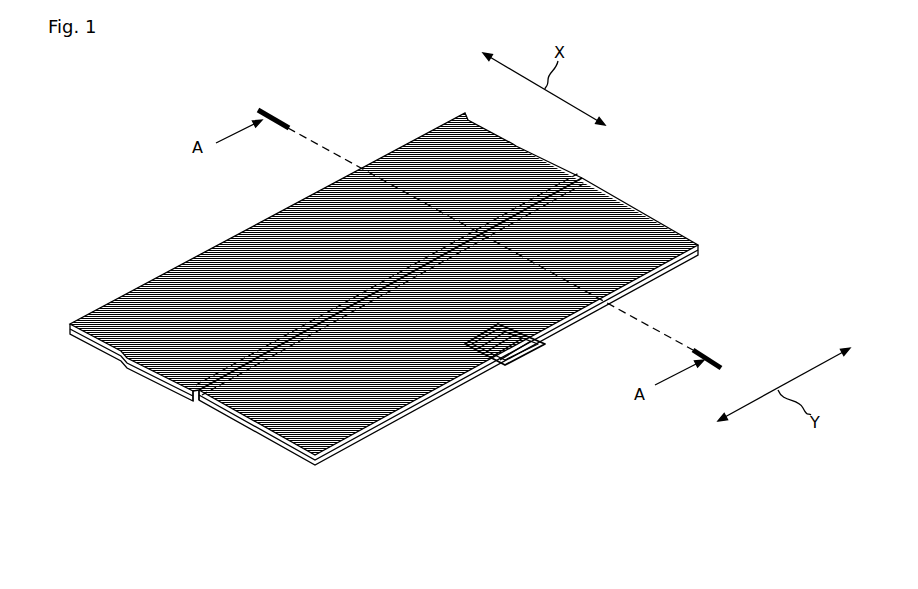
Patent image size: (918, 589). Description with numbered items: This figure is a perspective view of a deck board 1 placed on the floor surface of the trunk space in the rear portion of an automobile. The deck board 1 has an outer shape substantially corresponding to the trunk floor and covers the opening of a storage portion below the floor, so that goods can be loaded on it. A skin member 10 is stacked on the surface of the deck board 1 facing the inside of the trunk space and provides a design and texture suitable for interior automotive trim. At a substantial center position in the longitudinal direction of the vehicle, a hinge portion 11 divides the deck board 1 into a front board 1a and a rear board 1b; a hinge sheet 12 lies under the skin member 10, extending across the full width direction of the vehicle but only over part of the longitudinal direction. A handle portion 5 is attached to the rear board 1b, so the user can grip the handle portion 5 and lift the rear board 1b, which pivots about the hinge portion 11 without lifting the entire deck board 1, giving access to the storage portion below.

The deck board 1 is at (414, 331).
The front board 1a is at (248, 228).
The rear board 1b is at (355, 408).
The handle portion 5 is at (525, 346).
The skin member 10 is at (414, 302).
The hinge portion 11 is at (183, 393).
The hinge sheet 12 is at (605, 186).